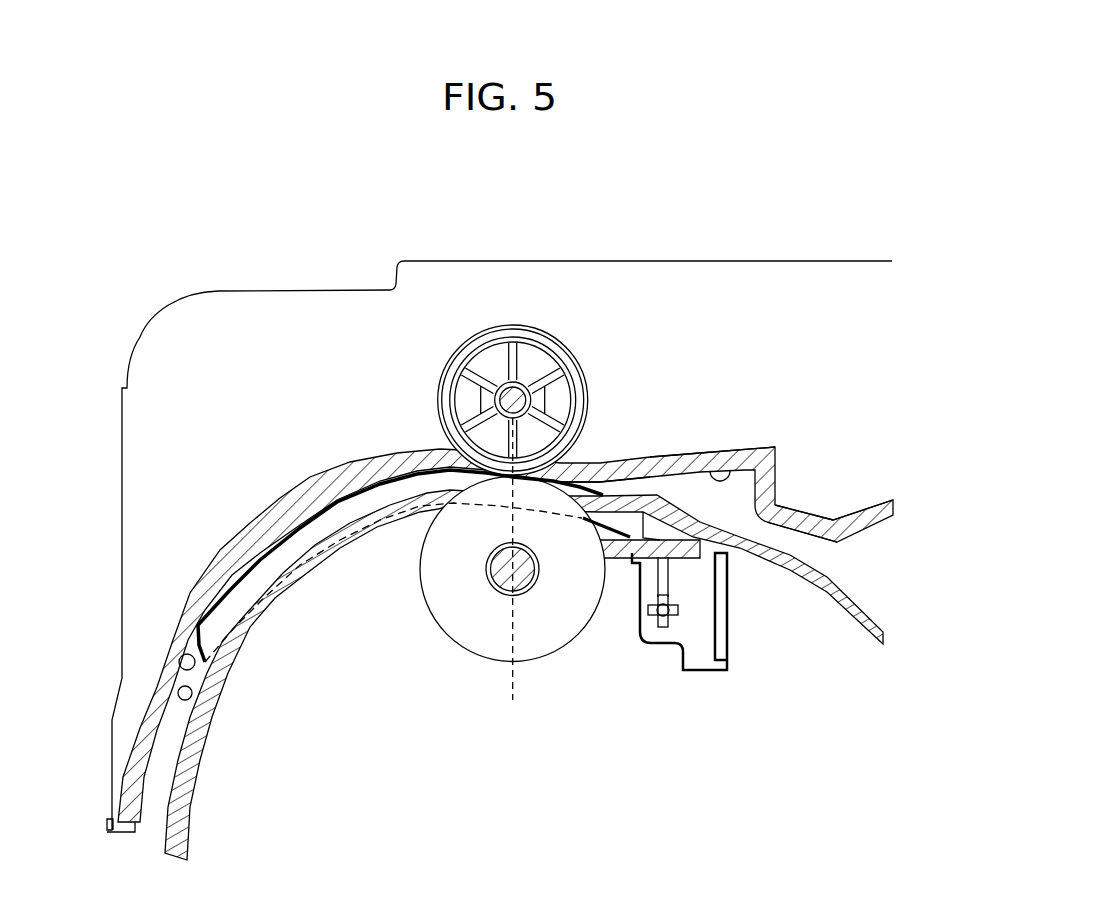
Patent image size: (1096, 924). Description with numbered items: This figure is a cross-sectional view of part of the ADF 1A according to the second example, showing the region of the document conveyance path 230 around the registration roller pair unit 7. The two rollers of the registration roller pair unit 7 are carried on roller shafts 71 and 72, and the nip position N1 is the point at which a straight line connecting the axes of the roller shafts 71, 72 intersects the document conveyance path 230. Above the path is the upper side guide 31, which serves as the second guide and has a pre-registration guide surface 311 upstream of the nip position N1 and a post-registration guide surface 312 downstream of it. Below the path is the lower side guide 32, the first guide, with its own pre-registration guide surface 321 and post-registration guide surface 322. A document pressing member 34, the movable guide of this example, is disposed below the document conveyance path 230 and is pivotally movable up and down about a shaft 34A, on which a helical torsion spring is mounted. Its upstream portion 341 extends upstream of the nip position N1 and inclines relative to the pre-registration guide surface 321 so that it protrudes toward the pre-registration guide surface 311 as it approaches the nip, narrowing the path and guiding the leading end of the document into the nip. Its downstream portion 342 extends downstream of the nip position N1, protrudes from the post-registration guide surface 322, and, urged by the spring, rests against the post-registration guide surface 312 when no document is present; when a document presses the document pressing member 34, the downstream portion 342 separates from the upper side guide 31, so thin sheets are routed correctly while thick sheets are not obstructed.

The ADF 1A is at (182, 281).
The registration roller pair unit 7 is at (530, 310).
The roller shaft 71 is at (507, 388).
The roller shaft 72 is at (507, 592).
The upper side guide 31 is at (176, 588).
The pre-registration guide surface 311 is at (707, 455).
The post-registration guide surface 312 is at (179, 672).
The lower side guide 32 is at (290, 615).
The pre-registration guide surface 321 is at (672, 505).
The post-registration guide surface 322 is at (192, 692).
The document pressing member 34 is at (655, 668).
The shaft 34A is at (678, 610).
The upstream portion 341 is at (582, 482).
The downstream portion 342 is at (338, 505).
The document conveyance path 230 is at (810, 540).
The nip position N1 is at (510, 577).